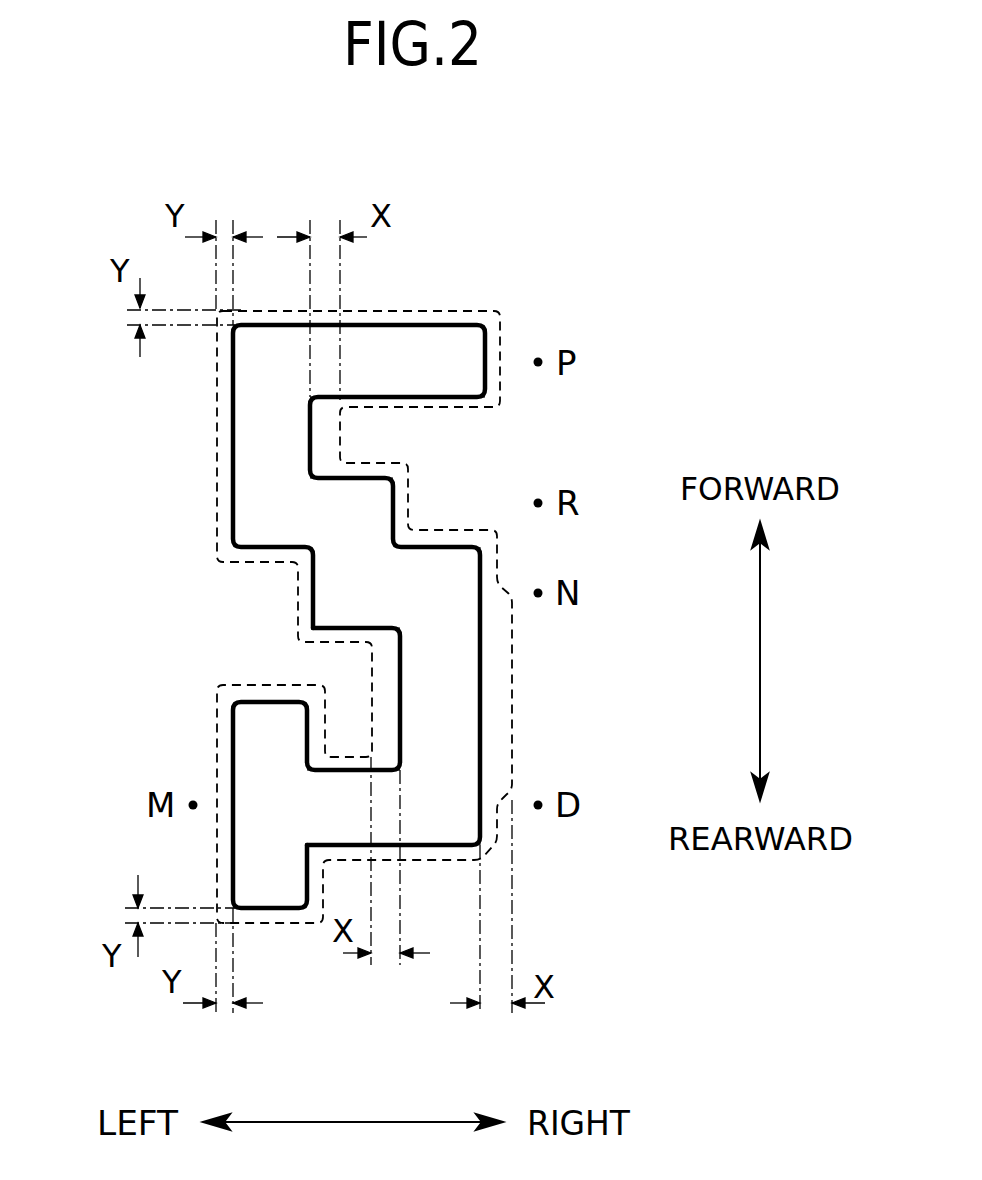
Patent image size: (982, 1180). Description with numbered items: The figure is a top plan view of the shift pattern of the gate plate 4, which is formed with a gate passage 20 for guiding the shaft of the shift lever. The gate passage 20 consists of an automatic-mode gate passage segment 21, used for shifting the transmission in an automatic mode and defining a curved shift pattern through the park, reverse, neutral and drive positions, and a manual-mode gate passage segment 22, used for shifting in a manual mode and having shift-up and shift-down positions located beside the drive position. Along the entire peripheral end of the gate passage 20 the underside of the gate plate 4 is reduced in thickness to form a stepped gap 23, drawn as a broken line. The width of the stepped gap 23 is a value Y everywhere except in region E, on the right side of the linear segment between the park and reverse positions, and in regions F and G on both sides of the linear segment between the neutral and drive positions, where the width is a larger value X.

The gate plate 4 is at (129, 433).
The gate passage 20 is at (78, 505).
The automatic-mode gate passage segment 21 is at (255, 474).
The manual-mode gate passage segment 22 is at (248, 737).
The stepped gap 23 is at (510, 745).
The region E is at (328, 437).
The region F is at (493, 692).
The region G is at (377, 677).